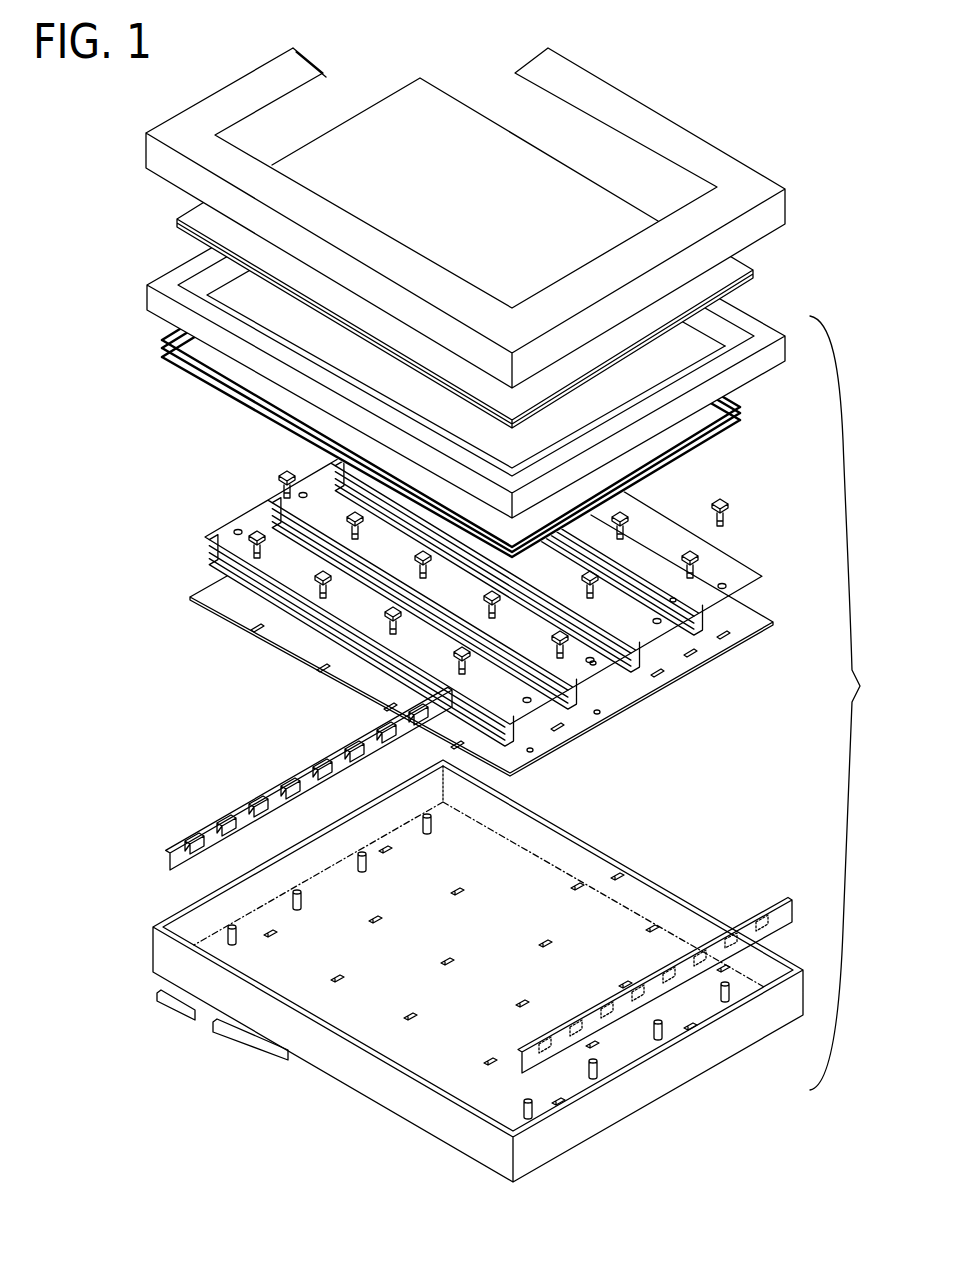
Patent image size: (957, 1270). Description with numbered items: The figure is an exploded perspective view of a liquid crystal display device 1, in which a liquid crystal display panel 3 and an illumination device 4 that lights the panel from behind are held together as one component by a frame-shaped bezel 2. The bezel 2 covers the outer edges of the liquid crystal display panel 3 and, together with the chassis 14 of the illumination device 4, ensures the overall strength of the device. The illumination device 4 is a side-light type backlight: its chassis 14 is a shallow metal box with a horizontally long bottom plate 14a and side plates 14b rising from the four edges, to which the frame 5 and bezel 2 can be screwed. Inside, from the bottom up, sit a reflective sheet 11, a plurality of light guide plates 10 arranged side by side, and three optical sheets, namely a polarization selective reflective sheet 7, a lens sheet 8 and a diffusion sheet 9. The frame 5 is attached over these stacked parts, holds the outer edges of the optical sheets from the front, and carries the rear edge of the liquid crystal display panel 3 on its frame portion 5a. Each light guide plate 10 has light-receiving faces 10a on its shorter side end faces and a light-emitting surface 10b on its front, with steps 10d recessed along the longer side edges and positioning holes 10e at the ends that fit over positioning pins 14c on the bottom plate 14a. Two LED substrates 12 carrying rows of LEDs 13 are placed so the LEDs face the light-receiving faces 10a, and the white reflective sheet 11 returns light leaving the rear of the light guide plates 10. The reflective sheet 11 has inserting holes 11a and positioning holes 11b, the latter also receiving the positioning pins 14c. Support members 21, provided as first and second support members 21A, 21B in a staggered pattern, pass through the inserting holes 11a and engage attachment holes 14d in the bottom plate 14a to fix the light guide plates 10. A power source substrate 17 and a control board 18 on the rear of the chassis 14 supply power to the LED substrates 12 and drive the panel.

The liquid crystal display device 1 is at (796, 152).
The bezel 2 is at (190, 116).
The liquid crystal display panel 3 is at (176, 224).
The illumination device 4 is at (851, 703).
The frame 5 is at (467, 323).
The frame portion 5a is at (702, 378).
The polarization selective reflective sheet 7 is at (185, 360).
The lens sheet 8 is at (210, 388).
The diffusion sheet 9 is at (232, 408).
The light guide plate 10 is at (437, 577).
The light-receiving face 10a is at (228, 530).
The light-emitting surface 10b is at (222, 556).
The step 10d is at (302, 617).
The positioning hole 10e is at (608, 657).
The reflective sheet 11 is at (481, 667).
The inserting hole 11a is at (334, 672).
The positioning hole 11b is at (547, 758).
The LED substrate 12 is at (479, 880).
The LED 13 is at (265, 808).
The chassis 14 is at (462, 975).
The bottom plate 14a is at (468, 1025).
The side plate 14b is at (228, 905).
The positioning pin 14c is at (226, 935).
The attachment hole 14d is at (548, 935).
The power source substrate 17 is at (175, 1015).
The control board 18 is at (242, 1058).
The support member 21 is at (477, 576).
The first support member 21A is at (594, 590).
The second support member 21B is at (790, 484).